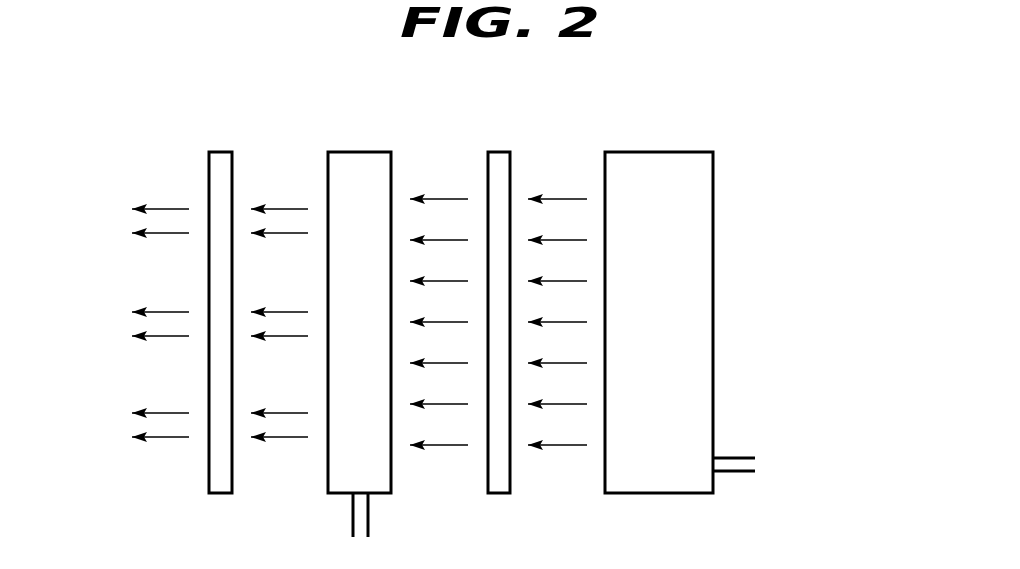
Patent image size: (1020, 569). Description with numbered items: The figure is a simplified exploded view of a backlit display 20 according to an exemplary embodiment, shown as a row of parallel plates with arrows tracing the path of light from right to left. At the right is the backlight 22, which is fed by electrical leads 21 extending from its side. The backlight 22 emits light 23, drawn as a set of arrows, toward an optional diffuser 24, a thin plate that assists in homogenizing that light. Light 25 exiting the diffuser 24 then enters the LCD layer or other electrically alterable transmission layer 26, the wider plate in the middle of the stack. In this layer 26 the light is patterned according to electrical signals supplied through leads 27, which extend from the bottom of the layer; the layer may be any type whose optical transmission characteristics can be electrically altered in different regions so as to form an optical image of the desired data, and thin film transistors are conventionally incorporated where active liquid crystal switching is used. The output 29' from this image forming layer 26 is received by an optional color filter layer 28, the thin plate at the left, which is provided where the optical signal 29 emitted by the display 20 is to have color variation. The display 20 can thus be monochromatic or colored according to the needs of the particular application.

The backlit display 20 is at (763, 177).
The electrical leads 21 is at (739, 455).
The backlight 22 is at (714, 273).
The light emitted from backlight 23 is at (563, 147).
The diffuser 24 is at (511, 478).
The light exiting diffuser 25 is at (445, 147).
The electrically alterable transmission layer 26 is at (392, 478).
The leads 27 is at (353, 519).
The color filter layer 28 is at (233, 480).
The optical signal 29 is at (160, 264).
The output from image forming layer 29' is at (279, 264).